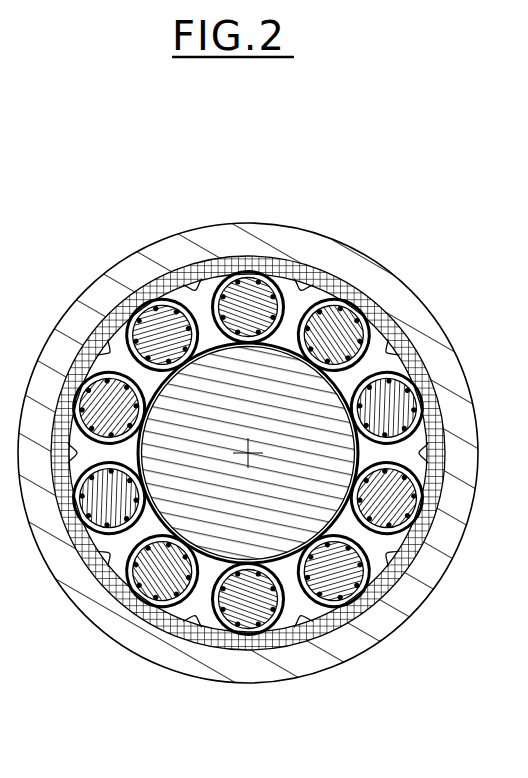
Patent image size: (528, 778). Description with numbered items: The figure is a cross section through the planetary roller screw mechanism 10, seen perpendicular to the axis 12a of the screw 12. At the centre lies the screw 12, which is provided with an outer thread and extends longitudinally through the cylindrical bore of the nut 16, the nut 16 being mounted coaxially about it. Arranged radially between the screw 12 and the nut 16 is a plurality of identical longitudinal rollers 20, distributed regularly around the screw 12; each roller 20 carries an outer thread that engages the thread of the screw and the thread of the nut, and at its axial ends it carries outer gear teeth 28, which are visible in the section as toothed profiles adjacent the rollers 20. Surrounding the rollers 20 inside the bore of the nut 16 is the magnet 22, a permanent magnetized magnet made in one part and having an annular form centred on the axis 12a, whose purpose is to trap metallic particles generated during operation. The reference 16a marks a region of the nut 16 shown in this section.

The planetary roller screw mechanism 10 is at (344, 221).
The screw 12 is at (294, 497).
The axis 12a is at (247, 452).
The nut 16 is at (388, 288).
The inner surface of jacket 16a is at (322, 603).
The longitudinal rollers 20 is at (249, 300).
The magnet 22 is at (427, 392).
The outer gear teeth 28 is at (96, 357).